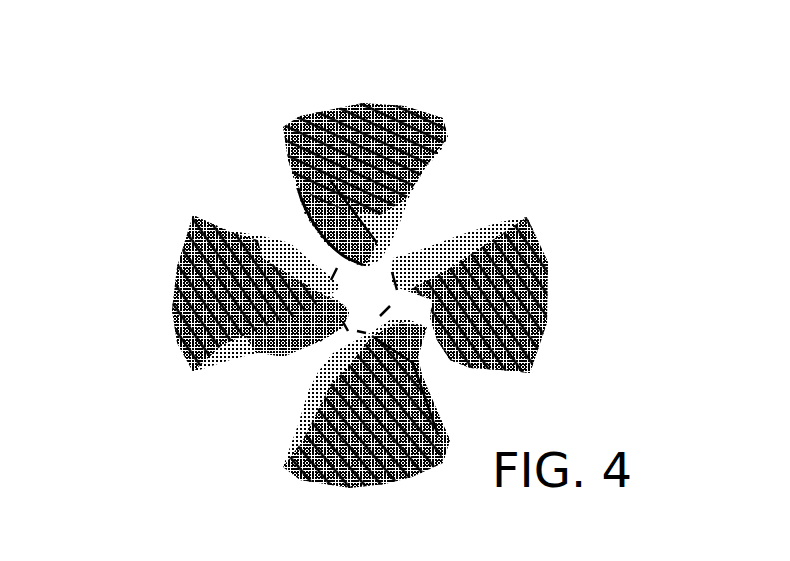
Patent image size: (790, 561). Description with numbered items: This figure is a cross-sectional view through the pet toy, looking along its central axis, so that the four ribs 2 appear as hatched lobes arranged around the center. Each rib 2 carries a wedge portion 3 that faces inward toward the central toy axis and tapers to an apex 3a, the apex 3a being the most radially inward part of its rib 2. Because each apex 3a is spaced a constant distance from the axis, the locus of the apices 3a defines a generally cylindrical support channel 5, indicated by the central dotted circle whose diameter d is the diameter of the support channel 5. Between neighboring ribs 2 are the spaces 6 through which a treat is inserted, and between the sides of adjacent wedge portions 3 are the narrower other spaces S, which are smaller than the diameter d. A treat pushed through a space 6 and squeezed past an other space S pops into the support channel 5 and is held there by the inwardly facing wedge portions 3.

The rib 2 is at (368, 112).
The wedge portion 3 is at (363, 266).
The apex 3a is at (292, 268).
The support channel 5 is at (385, 243).
The space between the ribs 6 is at (455, 178).
The diameter of the support channel d is at (357, 330).
The other spaces between the wedge portions S is at (452, 290).